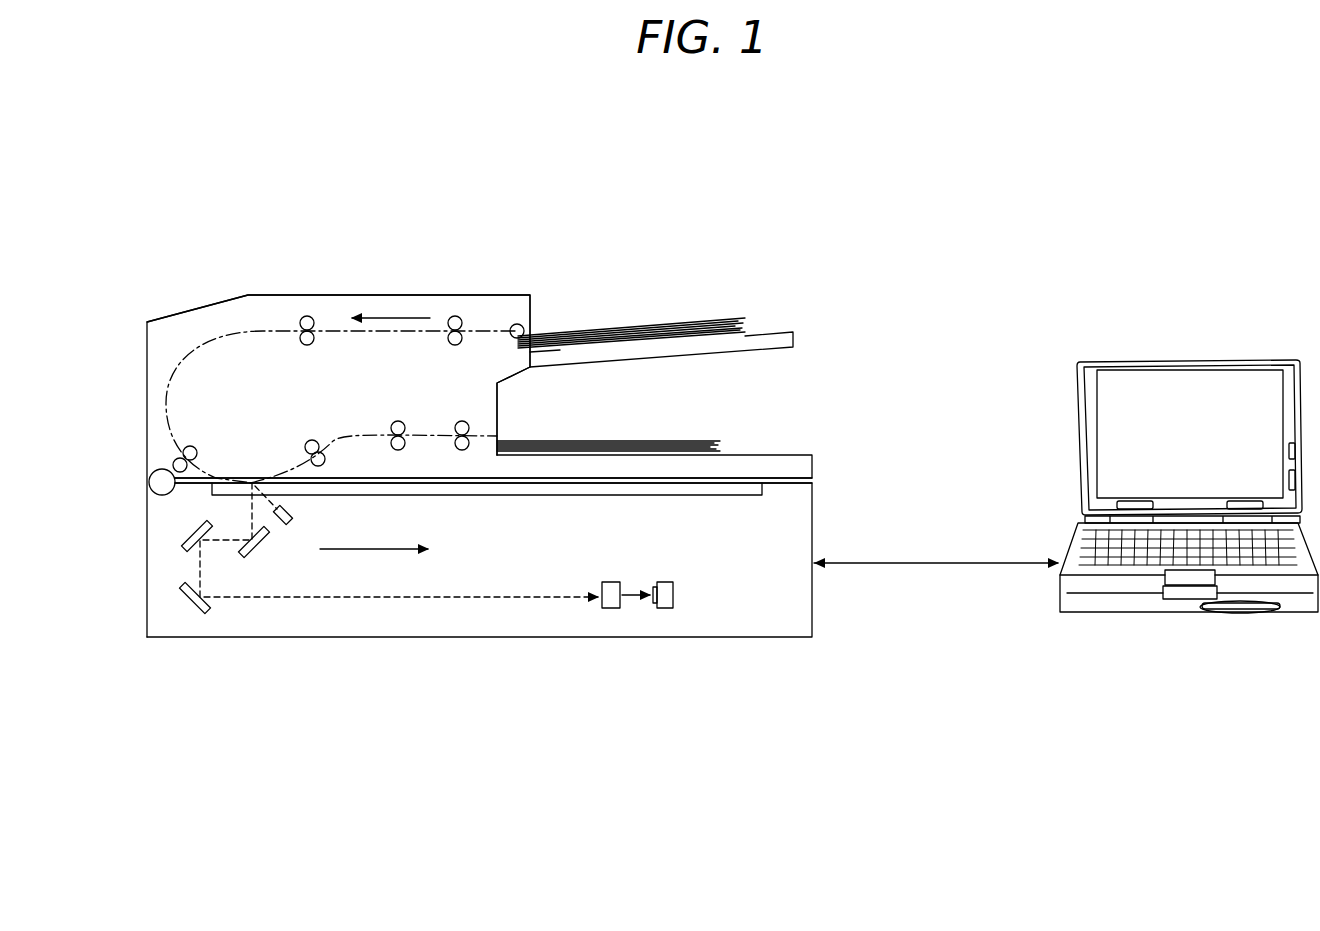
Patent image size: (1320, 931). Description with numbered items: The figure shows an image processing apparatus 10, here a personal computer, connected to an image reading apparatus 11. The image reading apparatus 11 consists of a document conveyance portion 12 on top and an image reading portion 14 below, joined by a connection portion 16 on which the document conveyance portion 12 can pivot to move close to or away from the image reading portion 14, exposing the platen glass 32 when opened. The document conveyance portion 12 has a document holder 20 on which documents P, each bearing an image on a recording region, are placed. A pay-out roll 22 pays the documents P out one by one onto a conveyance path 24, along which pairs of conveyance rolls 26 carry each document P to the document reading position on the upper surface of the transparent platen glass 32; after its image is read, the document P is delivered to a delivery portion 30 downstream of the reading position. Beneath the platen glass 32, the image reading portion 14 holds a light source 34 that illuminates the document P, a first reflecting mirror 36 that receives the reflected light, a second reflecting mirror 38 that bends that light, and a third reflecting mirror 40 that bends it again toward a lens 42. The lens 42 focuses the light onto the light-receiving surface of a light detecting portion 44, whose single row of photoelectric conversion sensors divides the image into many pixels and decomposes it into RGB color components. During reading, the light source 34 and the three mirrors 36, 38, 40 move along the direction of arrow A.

The image processing apparatus 10 is at (1240, 352).
The image reading apparatus 11 is at (710, 250).
The document conveyance portion 12 is at (323, 295).
The image reading portion 14 is at (147, 535).
The connection portion 16 is at (160, 481).
The document holder 20 is at (773, 332).
The pay-out roll 22 is at (515, 324).
The conveyance path 24 is at (427, 336).
The pairs of conveyance rolls 26 is at (321, 345).
The delivery portion 30 is at (771, 455).
The platen glass 32 is at (540, 495).
The light source 34 is at (292, 518).
The first reflecting mirror 36 is at (256, 552).
The second reflecting mirror 38 is at (186, 537).
The third reflecting mirror 40 is at (195, 605).
The lens 42 is at (608, 581).
The light detecting portion 44 is at (661, 581).
The document P is at (640, 320).
The direction of arrow A is at (373, 548).